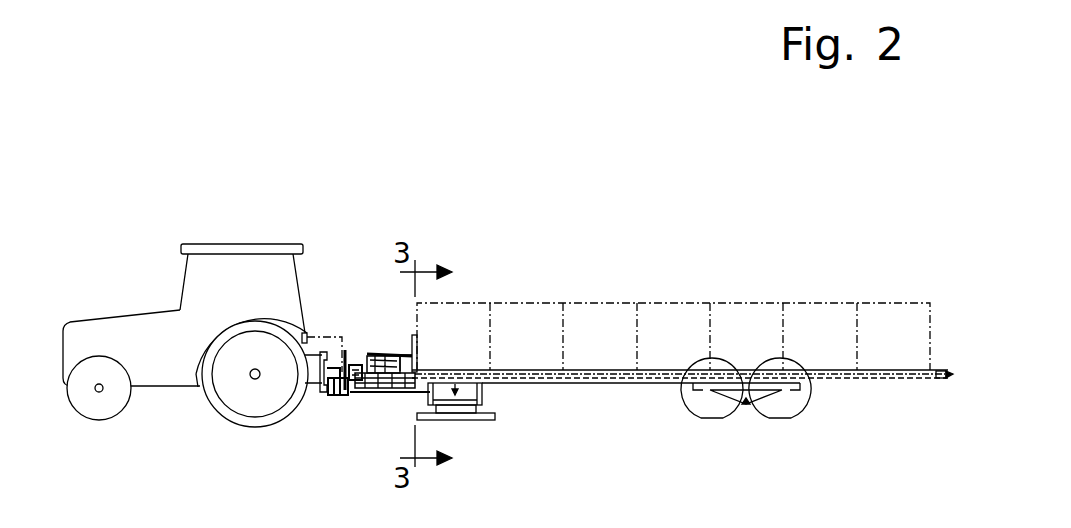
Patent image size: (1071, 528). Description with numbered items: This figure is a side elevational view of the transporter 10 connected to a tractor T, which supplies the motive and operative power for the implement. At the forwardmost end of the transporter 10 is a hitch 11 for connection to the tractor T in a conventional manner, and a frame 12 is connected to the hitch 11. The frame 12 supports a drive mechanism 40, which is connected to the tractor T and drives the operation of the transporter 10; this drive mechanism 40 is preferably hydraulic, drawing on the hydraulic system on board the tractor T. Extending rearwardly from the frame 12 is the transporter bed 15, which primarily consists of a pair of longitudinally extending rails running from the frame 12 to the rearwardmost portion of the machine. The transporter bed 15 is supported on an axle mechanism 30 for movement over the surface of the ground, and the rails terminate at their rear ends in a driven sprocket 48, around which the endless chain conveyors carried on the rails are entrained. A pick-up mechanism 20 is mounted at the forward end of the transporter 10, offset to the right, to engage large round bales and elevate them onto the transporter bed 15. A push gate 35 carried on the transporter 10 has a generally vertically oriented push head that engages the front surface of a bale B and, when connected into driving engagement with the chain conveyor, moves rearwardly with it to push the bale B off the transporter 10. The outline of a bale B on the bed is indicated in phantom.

The tractor T is at (193, 243).
The transporter 10 is at (693, 323).
The hitch 11 is at (350, 397).
The frame 12 is at (430, 385).
The transporter bed 15 is at (857, 378).
The pick-up mechanism 20 is at (494, 427).
The axle mechanism 30 is at (751, 433).
The push gate 35 is at (395, 353).
The drive mechanism 40 is at (365, 338).
The driven sprocket 48 is at (950, 378).
The bale B is at (763, 320).